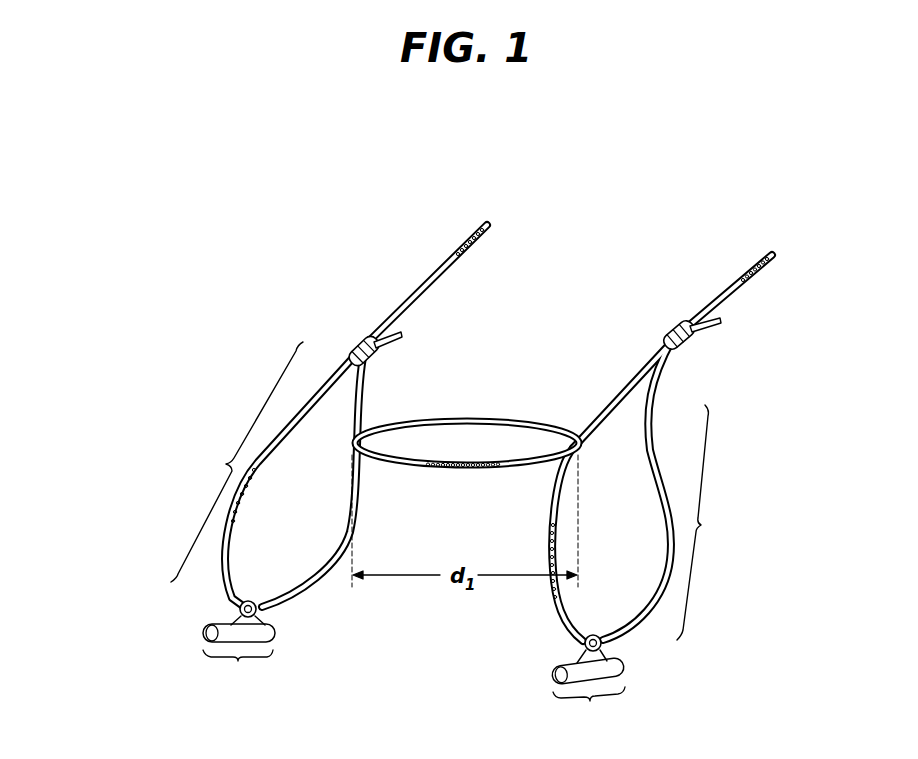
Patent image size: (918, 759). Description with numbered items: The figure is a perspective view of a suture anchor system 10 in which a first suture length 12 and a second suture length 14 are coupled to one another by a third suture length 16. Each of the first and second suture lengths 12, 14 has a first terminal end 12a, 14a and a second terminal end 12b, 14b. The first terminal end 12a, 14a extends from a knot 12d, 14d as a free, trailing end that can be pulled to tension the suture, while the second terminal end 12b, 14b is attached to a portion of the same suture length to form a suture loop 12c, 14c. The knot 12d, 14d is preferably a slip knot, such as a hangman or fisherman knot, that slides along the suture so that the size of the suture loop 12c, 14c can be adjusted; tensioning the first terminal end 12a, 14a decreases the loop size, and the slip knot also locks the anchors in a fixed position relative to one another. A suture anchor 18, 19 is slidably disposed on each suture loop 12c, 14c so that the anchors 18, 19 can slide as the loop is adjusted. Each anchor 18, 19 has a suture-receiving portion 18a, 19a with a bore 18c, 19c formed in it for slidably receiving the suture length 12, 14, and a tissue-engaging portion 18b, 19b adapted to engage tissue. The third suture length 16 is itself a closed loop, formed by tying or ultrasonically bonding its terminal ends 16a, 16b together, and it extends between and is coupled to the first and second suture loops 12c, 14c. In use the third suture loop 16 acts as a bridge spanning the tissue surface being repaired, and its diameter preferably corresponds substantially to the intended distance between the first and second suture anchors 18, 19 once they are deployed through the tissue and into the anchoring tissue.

The suture anchor system 10 is at (206, 189).
The first suture length 12 is at (329, 396).
The first terminal end 12a is at (444, 229).
The second terminal end 12b is at (378, 372).
The suture loop 12c is at (265, 474).
The knot 12d is at (352, 343).
The second suture length 14 is at (662, 426).
The first terminal end 14a is at (753, 258).
The second terminal end 14b is at (674, 369).
The suture loop 14c is at (648, 523).
The knot 14d is at (670, 330).
The third suture length 16 is at (467, 450).
The terminal end 16a is at (420, 482).
The terminal end 16b is at (489, 482).
The suture anchor 18 is at (231, 638).
The suture-receiving portion 18a is at (229, 602).
The tissue-engaging portion 18b is at (239, 654).
The bore 18c is at (266, 618).
The suture anchor 19 is at (591, 672).
The suture-receiving portion 19a is at (616, 650).
The tissue-engaging portion 19b is at (588, 689).
The bore 19c is at (588, 648).